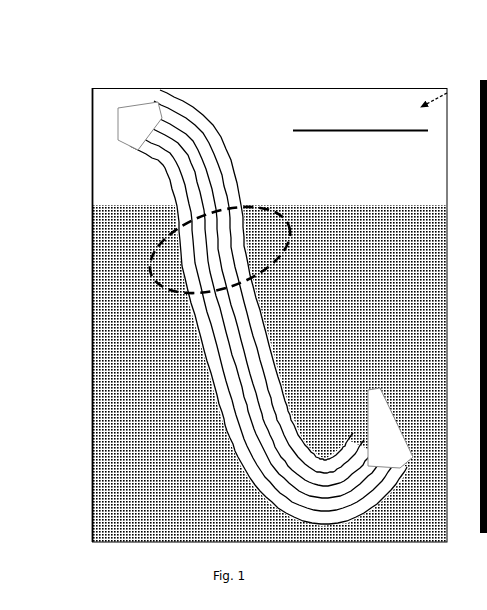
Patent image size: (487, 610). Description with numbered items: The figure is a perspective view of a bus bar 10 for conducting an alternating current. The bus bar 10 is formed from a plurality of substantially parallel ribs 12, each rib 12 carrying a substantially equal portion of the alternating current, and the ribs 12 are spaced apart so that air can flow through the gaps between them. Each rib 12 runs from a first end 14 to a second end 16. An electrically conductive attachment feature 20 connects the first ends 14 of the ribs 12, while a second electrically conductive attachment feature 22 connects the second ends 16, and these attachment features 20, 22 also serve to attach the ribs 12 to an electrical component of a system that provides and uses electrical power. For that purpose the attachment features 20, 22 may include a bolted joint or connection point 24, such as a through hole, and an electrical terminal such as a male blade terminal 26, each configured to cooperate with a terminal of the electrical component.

The bus bar 10 is at (258, 306).
The rib 12 is at (289, 219).
The first end 14 is at (220, 338).
The second end 16 is at (381, 523).
The electrically conductive attachment feature 20 is at (138, 80).
The electrically conductive attachment feature 22 is at (431, 394).
The bolted joint or connection point 24 is at (142, 118).
The male blade terminal 26 is at (394, 396).